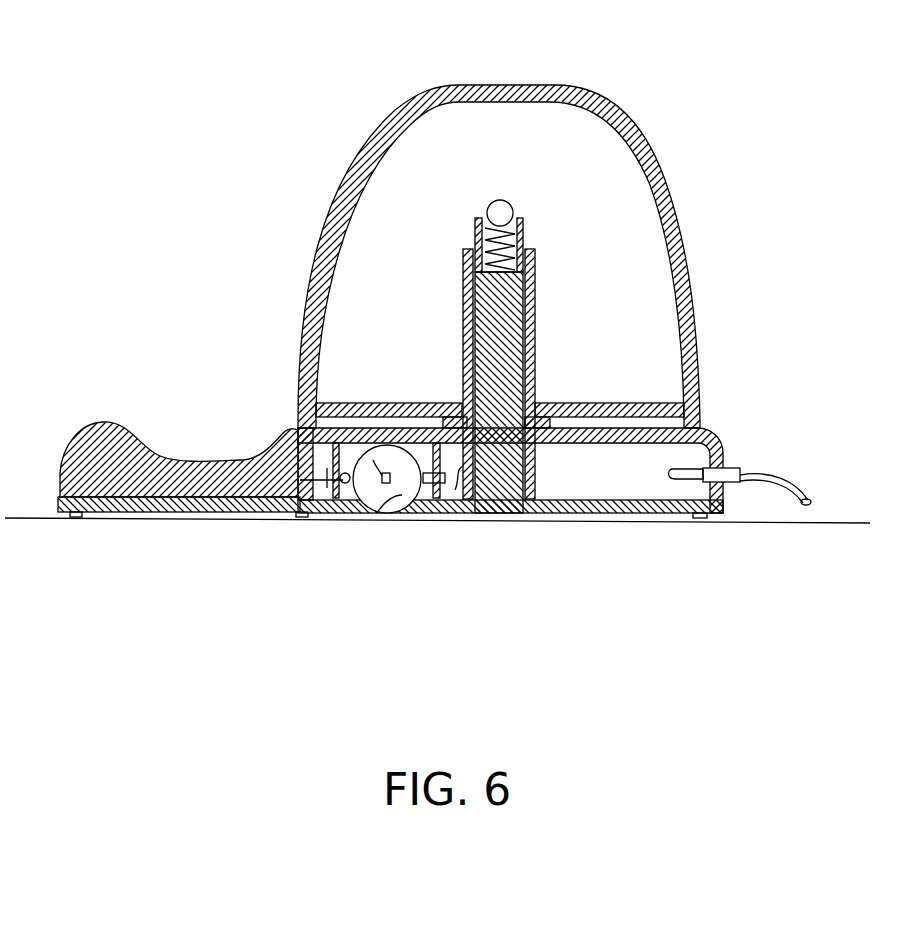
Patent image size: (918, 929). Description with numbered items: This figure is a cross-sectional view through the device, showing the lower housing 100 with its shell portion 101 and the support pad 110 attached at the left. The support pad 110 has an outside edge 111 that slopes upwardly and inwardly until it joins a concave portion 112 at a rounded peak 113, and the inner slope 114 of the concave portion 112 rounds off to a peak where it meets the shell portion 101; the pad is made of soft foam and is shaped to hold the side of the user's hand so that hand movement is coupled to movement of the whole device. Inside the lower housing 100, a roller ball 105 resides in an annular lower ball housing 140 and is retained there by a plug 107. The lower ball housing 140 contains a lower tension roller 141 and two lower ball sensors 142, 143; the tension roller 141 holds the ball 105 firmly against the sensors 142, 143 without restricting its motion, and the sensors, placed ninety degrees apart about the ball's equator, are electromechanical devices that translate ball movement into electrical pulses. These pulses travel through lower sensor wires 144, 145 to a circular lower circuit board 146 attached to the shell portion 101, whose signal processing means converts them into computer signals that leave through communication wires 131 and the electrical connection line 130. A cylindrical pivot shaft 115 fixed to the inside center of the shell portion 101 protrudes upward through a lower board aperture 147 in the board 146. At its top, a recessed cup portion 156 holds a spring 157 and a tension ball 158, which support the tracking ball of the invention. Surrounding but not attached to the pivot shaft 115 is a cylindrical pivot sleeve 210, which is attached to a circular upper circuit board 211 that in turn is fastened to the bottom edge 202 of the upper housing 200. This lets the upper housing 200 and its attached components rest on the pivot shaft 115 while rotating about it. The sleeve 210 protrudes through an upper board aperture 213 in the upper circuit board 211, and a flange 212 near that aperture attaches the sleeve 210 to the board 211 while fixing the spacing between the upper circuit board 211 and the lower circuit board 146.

The lower housing 100 is at (738, 447).
The shell portion 101 is at (300, 410).
The roller ball 105 is at (402, 495).
The plug 107 is at (330, 482).
The support pad 110 is at (103, 470).
The outside edge 111 is at (60, 458).
The concave portion 112 is at (213, 460).
The rounded peak 113 is at (103, 423).
The inner slope 114 is at (275, 450).
The pivot shaft 115 is at (497, 487).
The electrical connection line 130 is at (785, 485).
The communication wires 131 is at (682, 484).
The lower ball housing 140 is at (425, 493).
The lower tension roller 141 is at (333, 492).
The lower ball sensor 142 is at (372, 490).
The lower ball sensor 143 is at (436, 488).
The lower sensor wire 144 is at (345, 482).
The lower sensor wire 145 is at (465, 470).
The lower circuit board 146 is at (583, 435).
The lower board aperture 147 is at (485, 448).
The recessed cup portion 156 is at (530, 255).
The spring 157 is at (537, 290).
The tension ball 158 is at (497, 212).
The upper housing 200 is at (358, 120).
The bottom edge 202 is at (713, 420).
The pivot sleeve 210 is at (475, 272).
The upper circuit board 211 is at (363, 400).
The flange 212 is at (545, 400).
The upper board aperture 213 is at (540, 320).